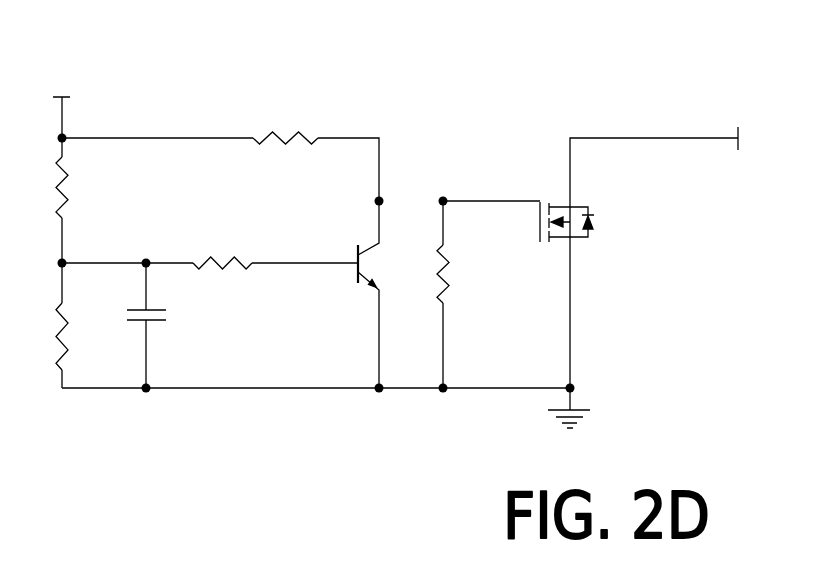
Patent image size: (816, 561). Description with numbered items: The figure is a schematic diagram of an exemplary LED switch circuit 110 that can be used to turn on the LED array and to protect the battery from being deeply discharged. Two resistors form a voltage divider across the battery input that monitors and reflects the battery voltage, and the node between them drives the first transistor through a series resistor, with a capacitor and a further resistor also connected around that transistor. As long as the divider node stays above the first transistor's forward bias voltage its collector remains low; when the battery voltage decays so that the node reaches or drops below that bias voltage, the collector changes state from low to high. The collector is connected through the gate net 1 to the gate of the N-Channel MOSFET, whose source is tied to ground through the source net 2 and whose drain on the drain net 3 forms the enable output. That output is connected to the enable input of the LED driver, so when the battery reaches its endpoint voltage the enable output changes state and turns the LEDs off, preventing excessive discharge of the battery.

The LED switch circuit 110 is at (180, 17).
The gate net node 1 is at (491, 187).
The source net node 2 is at (579, 312).
The drain net node 3 is at (650, 162).